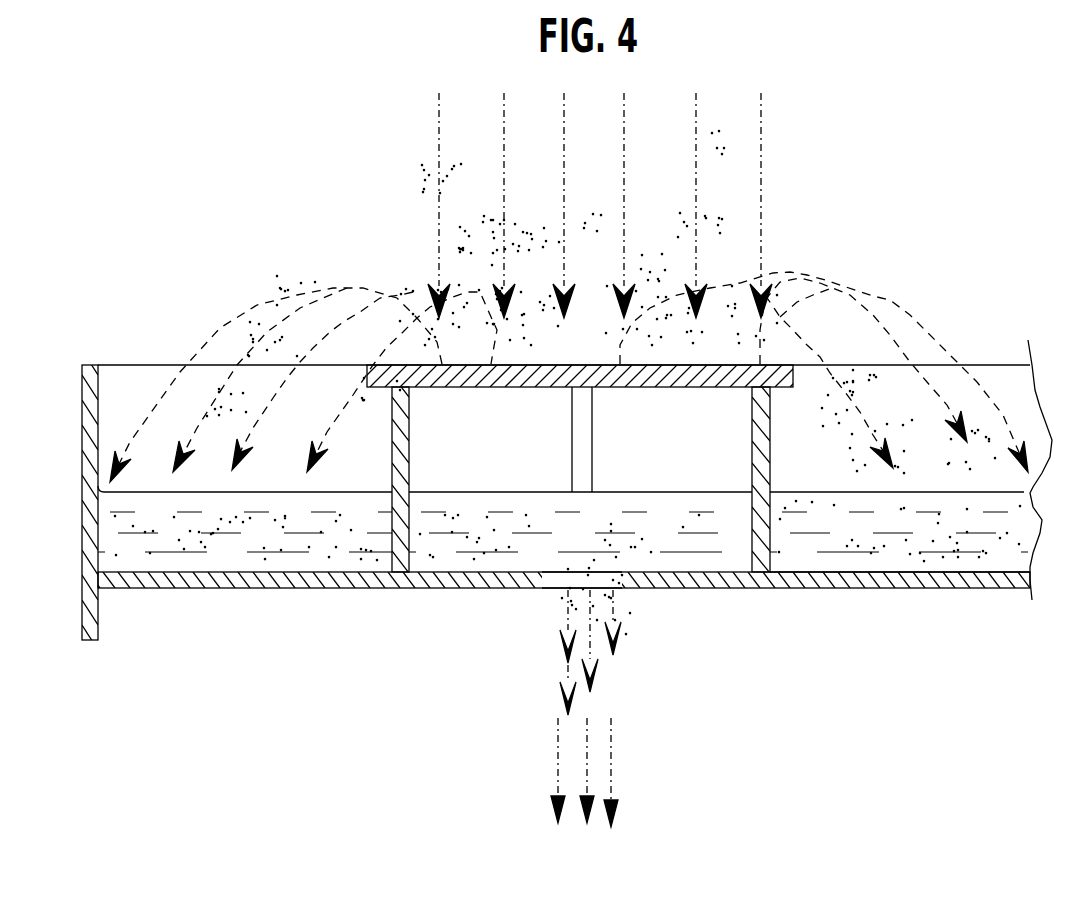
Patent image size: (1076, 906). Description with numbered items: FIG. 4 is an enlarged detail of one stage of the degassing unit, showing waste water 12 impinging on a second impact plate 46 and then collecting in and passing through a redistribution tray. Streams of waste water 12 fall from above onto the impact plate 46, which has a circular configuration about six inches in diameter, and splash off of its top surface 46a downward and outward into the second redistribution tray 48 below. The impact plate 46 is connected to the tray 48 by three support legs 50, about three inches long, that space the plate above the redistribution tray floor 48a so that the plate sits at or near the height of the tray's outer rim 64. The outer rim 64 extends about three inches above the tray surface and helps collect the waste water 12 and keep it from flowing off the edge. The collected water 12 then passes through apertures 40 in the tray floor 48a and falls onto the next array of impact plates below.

The waste water 12 is at (762, 126).
The outer rim 64 is at (82, 397).
The second impact plate 46 is at (584, 522).
The top surface of impact plate 46a is at (626, 296).
The support legs 50 is at (492, 535).
The apertures 40 is at (557, 690).
The second redistribution tray 48 is at (227, 590).
The redistribution tray floor 48a is at (900, 619).